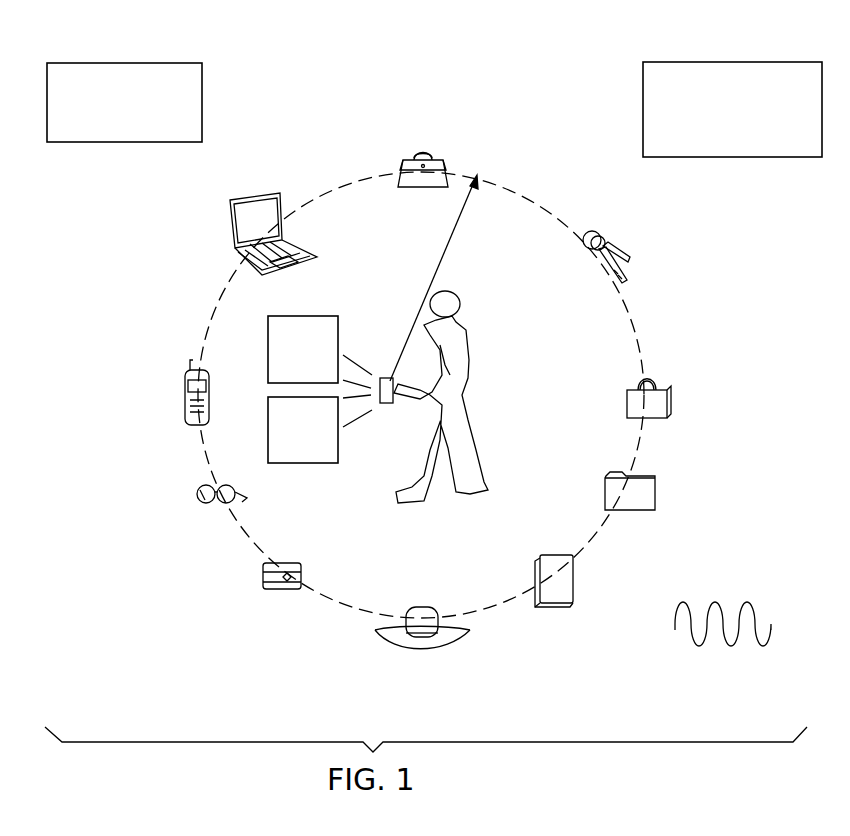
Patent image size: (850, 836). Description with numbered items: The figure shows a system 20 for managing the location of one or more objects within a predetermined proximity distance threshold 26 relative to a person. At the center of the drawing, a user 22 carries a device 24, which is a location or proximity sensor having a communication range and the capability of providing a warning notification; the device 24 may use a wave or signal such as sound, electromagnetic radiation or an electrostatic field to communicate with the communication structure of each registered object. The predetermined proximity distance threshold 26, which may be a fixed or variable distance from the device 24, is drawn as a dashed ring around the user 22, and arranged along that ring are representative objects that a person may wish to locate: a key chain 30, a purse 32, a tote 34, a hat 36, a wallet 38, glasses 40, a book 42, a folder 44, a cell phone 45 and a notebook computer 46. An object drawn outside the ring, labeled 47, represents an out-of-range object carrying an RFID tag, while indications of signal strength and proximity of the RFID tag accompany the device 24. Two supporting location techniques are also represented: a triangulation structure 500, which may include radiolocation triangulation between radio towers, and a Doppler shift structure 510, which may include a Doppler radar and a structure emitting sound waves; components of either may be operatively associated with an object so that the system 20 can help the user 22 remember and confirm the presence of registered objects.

The system 20 is at (757, 223).
The user 22 is at (460, 357).
The device 24 is at (387, 405).
The predetermined proximity distance threshold 26 is at (458, 230).
The key chain 30 is at (632, 250).
The purse 32 is at (400, 173).
The tote 34 is at (660, 400).
The hat 36 is at (427, 645).
The wallet 38 is at (277, 578).
The glasses 40 is at (198, 494).
The book 42 is at (565, 582).
The folder 44 is at (645, 498).
The cell phone 45 is at (197, 393).
The notebook computer 46 is at (238, 222).
The out of range object with RFID 47 is at (775, 637).
The triangulation structure 500 is at (202, 90).
The Doppler shift structure 510 is at (643, 73).